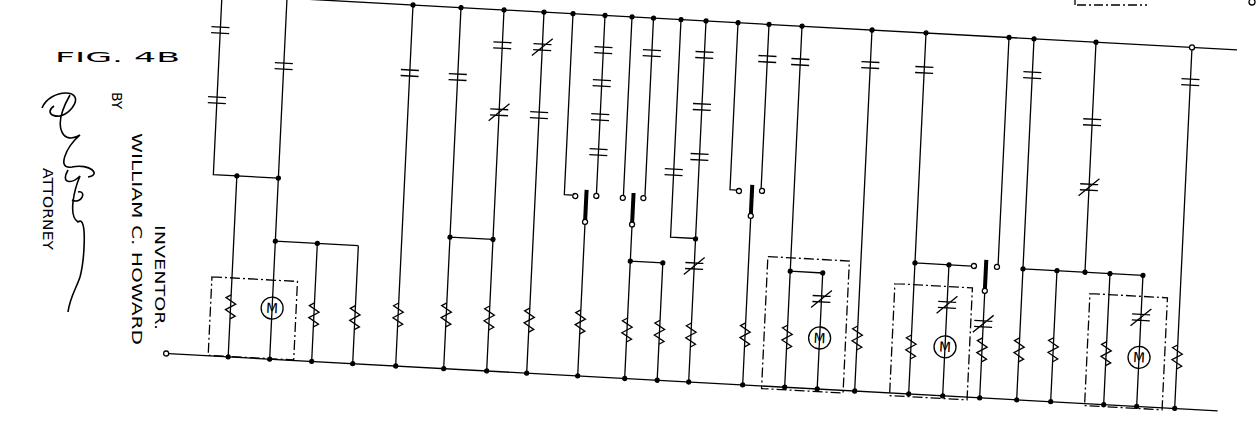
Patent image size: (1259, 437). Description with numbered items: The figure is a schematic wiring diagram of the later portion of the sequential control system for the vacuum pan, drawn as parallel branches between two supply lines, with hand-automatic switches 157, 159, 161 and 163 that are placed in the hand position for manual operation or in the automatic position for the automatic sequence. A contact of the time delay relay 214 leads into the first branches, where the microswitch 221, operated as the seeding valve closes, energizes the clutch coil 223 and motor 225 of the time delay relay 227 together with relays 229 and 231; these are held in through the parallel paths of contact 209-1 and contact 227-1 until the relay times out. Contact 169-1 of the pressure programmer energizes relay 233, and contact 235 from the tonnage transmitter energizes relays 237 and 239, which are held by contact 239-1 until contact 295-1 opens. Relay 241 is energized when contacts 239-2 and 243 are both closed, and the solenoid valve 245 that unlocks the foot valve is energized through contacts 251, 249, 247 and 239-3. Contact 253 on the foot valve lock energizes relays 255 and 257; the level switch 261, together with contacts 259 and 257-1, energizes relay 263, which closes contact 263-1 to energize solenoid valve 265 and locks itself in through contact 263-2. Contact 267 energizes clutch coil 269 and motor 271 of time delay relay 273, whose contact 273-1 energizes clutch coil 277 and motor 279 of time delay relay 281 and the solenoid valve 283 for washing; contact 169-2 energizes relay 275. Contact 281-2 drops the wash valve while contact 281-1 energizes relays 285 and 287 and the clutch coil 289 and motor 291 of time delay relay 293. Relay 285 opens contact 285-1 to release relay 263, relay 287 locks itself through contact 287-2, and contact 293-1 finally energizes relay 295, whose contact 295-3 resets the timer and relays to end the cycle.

The time delay relay 214 is at (1147, 11).
The microswitch 221 is at (232, 40).
The contact 209-1 is at (231, 110).
The contact 227-1 is at (296, 73).
The contact 169-1 is at (404, 73).
The contact 235 is at (452, 76).
The contact 239-1 is at (495, 40).
The contact 243 is at (535, 40).
The contact 295-1 is at (495, 108).
The contact 239-2 is at (537, 109).
The contact 251 is at (597, 40).
The contact 249 is at (596, 75).
The contact 247 is at (596, 109).
The contact 239-3 is at (614, 142).
The contact 253 is at (662, 40).
The contact 263-2 is at (674, 152).
The contact 259 is at (715, 39).
The level switch 261 is at (715, 89).
The contact 257-1 is at (715, 144).
The contact 263-1 is at (760, 39).
The contact 267 is at (812, 43).
The contact 169-2 is at (863, 40).
The contact 273-1 is at (936, 41).
The contact 281-1 is at (1043, 41).
The contact 287-2 is at (1106, 84).
The contact 295-3 is at (1106, 150).
The contact 293-1 is at (1202, 39).
The contact 285-1 is at (715, 250).
The hand-automatic switch 157 is at (592, 203).
The hand-automatic switch 159 is at (648, 202).
The hand-automatic switch 161 is at (769, 182).
The hand-automatic switch 163 is at (997, 226).
The time delay relay 227 is at (226, 287).
The time delay relay 273 is at (827, 236).
The time delay relay 281 is at (907, 257).
The time delay relay 293 is at (1102, 270).
The clutch coil 223 is at (248, 322).
The motor 225 is at (279, 305).
The relay 229 is at (333, 321).
The relay 231 is at (374, 321).
The relay 233 is at (417, 317).
The relay 237 is at (465, 315).
The relay 239 is at (508, 316).
The relay 241 is at (549, 316).
The solenoid valve 245 is at (599, 316).
The relay 255 is at (636, 320).
The relay 257 is at (670, 319).
The relay 263 is at (711, 316).
The solenoid valve 265 is at (754, 319).
The clutch coil 269 is at (803, 319).
The motor 271 is at (825, 312).
The relay 275 is at (874, 316).
The clutch coil 277 is at (928, 320).
The motor 279 is at (951, 314).
The contact 281-2 is at (1006, 289).
The solenoid valve 283 is at (1000, 319).
The relay 285 is at (1036, 318).
The relay 287 is at (1071, 317).
The clutch coil 289 is at (1118, 368).
The motor 291 is at (1144, 312).
The relay 295 is at (1193, 369).